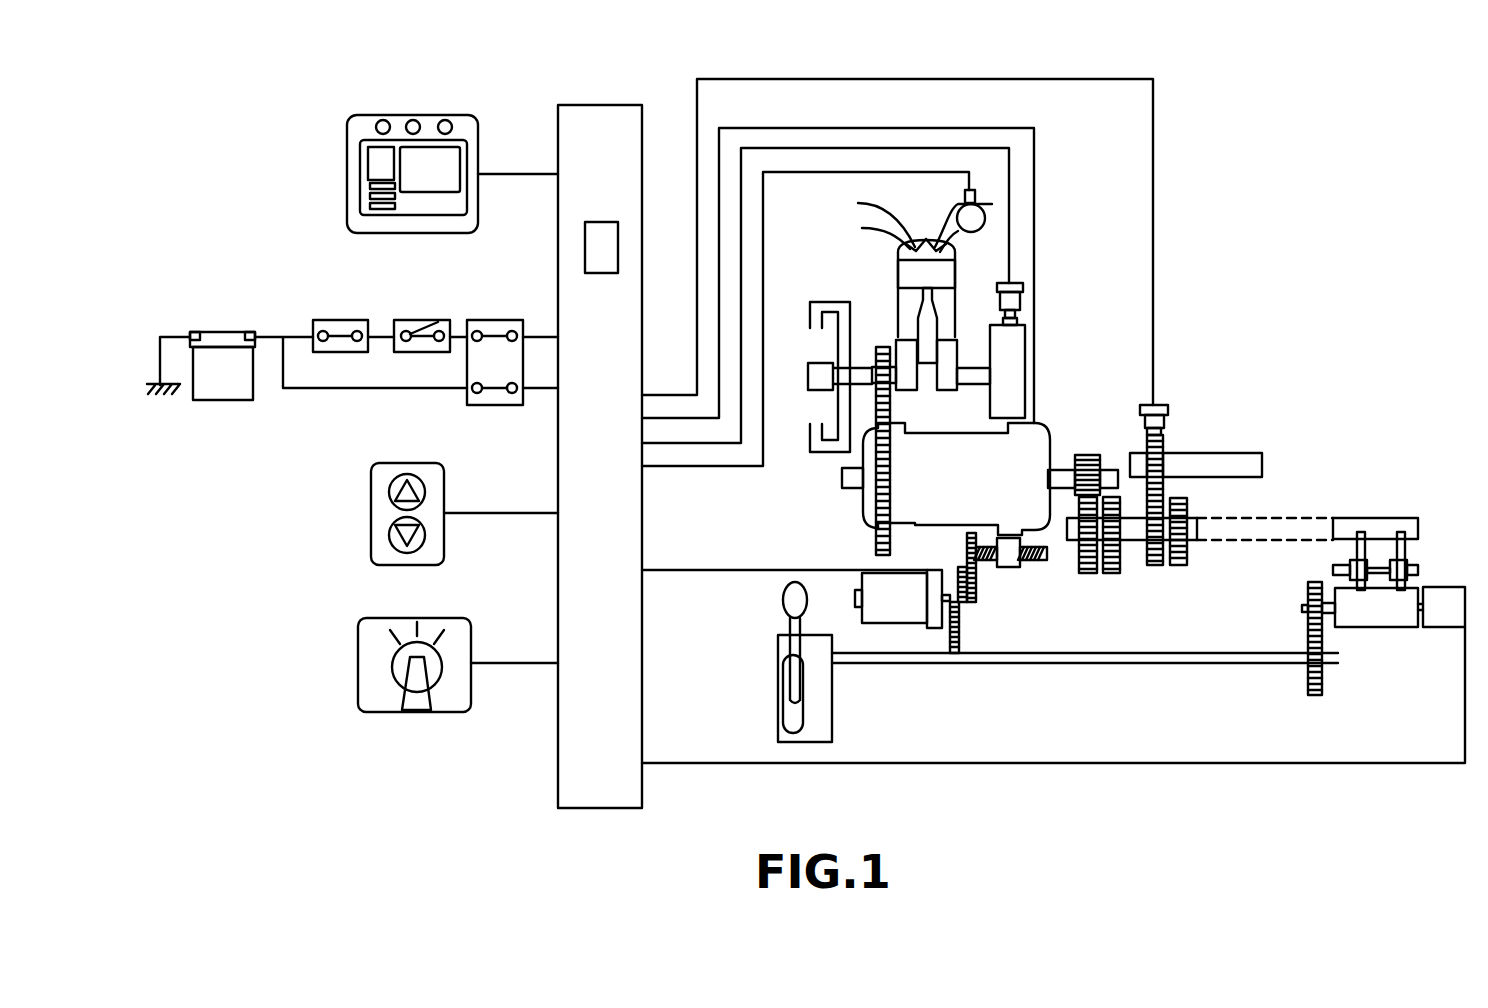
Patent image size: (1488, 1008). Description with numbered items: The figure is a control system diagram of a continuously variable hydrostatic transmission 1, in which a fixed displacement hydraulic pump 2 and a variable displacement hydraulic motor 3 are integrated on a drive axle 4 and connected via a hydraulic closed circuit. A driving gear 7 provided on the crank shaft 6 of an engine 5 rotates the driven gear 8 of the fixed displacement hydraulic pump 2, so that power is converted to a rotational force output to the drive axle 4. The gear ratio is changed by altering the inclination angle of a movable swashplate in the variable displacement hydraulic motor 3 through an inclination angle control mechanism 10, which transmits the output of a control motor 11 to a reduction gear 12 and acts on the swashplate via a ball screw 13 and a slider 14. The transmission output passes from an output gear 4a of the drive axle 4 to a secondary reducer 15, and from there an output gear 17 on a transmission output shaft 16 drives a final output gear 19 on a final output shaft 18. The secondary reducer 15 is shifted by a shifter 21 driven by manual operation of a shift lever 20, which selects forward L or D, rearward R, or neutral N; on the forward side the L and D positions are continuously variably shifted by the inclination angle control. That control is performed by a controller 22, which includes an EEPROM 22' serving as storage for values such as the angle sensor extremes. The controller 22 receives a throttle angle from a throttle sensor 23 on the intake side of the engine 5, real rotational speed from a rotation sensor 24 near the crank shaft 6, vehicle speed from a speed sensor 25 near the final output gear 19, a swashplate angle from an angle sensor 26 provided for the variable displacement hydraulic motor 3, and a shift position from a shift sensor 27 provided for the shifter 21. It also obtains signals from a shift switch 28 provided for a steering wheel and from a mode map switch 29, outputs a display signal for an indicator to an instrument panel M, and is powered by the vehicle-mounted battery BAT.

The continuously variable hydrostatic transmission 1 is at (847, 504).
The fixed displacement hydraulic pump 2 is at (868, 516).
The variable displacement hydraulic motor 3 is at (962, 447).
The drive axle 4 is at (1066, 482).
The output gear 4a is at (1084, 455).
The engine 5 is at (898, 268).
The crank shaft 6 is at (968, 370).
The driving gear 7 is at (882, 347).
The driven gear 8 is at (892, 490).
The inclination angle control mechanism 10 is at (864, 636).
The control motor 11 is at (905, 612).
The reduction gear 12 is at (975, 620).
The ball screw 13 is at (1036, 568).
The slider 14 is at (1002, 568).
The secondary reducer 15 is at (1135, 568).
The transmission output shaft 16 is at (1199, 530).
The output gear 17 is at (1157, 567).
The final output shaft 18 is at (1260, 470).
The final output gear 19 is at (1168, 447).
The shift lever 20 is at (783, 603).
The shifter 21 is at (1377, 585).
The controller 22 is at (600, 426).
The EEPROM 22' is at (552, 255).
The throttle sensor 23 is at (985, 219).
The rotation sensor 24 is at (1016, 305).
The speed sensor 25 is at (1166, 410).
The angle sensor 26 is at (1042, 455).
The shift sensor 27 is at (1443, 593).
The shift switch 28 is at (371, 512).
The mode map switch 29 is at (358, 665).
The instrument panel M is at (347, 150).
The vehicle-mounted battery BAT is at (352, 372).